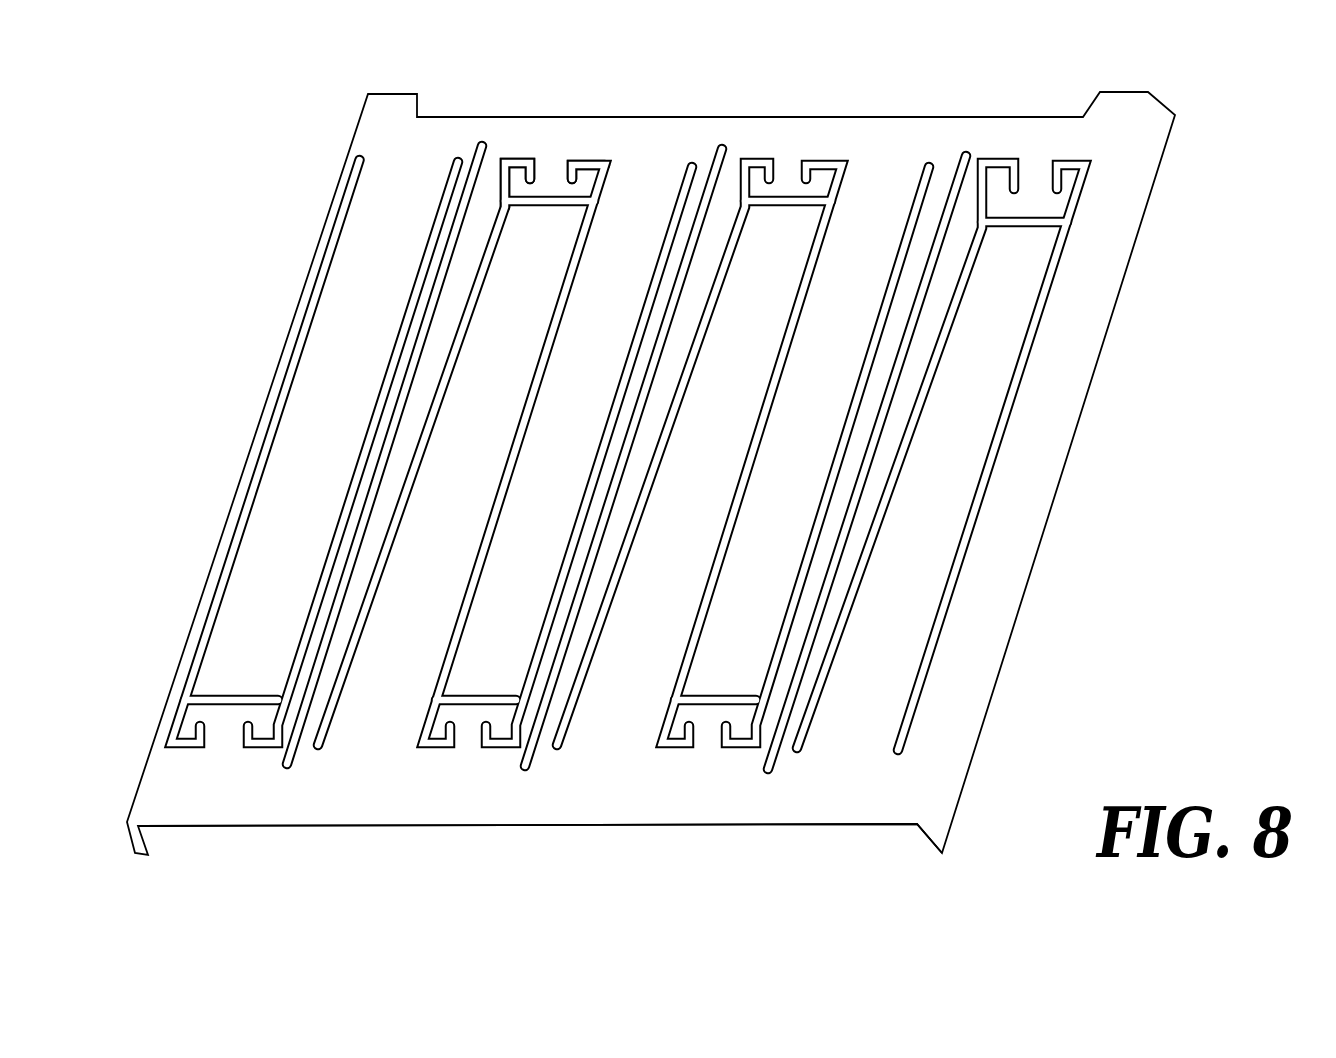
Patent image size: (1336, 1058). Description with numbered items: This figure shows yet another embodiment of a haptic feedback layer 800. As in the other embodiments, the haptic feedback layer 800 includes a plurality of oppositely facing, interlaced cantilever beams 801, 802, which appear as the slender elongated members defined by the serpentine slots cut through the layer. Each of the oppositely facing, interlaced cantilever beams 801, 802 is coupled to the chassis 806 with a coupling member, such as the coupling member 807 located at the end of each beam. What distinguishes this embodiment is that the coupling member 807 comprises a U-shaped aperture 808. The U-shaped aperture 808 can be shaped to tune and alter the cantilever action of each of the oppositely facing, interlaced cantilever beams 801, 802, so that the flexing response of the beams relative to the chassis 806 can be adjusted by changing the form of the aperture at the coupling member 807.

The haptic feedback layer 800 is at (177, 343).
The cantilever beam 801 is at (242, 633).
The cantilever beam 802 is at (378, 695).
The chassis 806 is at (835, 797).
The coupling member 807 is at (541, 160).
The U-shaped aperture 808 is at (518, 160).